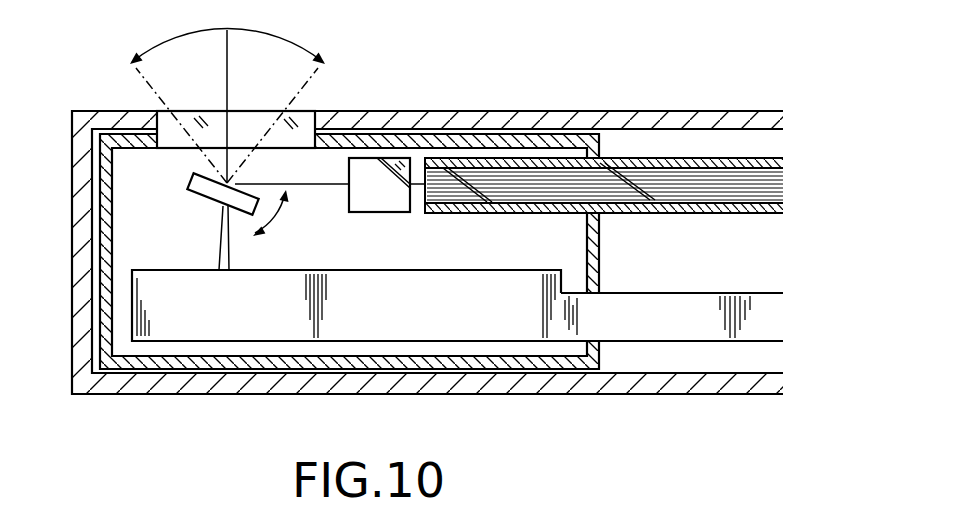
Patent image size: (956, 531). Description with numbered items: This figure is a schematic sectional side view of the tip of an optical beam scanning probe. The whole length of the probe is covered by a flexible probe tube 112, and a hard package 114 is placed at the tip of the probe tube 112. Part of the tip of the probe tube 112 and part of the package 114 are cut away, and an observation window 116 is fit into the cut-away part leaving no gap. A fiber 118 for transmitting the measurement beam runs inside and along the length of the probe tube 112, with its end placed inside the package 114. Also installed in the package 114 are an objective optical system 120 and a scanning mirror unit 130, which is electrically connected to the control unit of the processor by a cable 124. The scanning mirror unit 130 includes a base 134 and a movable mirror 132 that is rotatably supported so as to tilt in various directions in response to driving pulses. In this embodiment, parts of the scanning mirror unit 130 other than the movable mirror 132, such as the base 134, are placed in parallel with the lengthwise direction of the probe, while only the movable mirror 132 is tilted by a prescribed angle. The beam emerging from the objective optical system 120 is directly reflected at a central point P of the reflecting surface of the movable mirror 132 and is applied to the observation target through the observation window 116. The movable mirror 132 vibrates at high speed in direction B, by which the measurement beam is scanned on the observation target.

The probe tube 112 is at (723, 121).
The package 114 is at (531, 140).
The observation window 116 is at (308, 111).
The fiber 118 is at (703, 214).
The objective optical system 120 is at (375, 205).
The cable 124 is at (672, 342).
The scanning mirror unit 130 is at (133, 187).
The movable mirror 132 is at (210, 197).
The base 134 is at (200, 274).
The central point P is at (236, 183).
The direction B is at (274, 213).